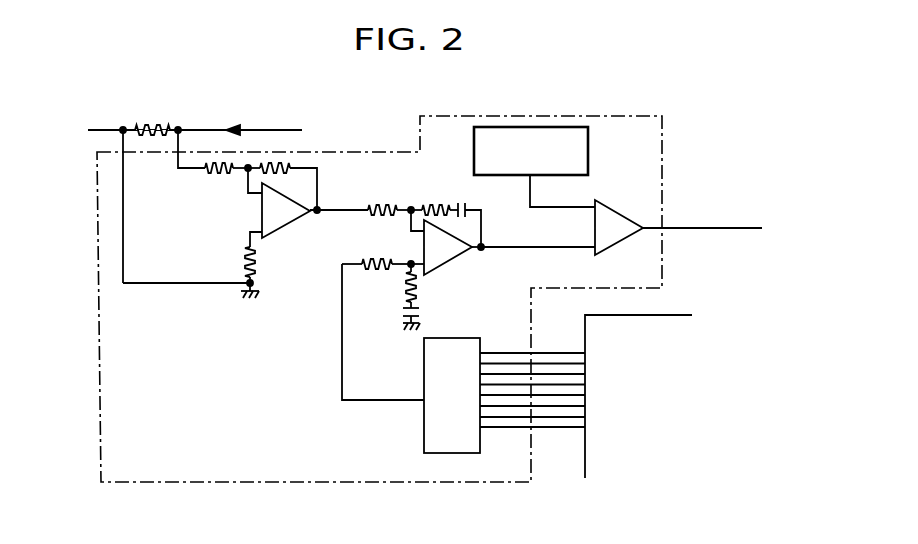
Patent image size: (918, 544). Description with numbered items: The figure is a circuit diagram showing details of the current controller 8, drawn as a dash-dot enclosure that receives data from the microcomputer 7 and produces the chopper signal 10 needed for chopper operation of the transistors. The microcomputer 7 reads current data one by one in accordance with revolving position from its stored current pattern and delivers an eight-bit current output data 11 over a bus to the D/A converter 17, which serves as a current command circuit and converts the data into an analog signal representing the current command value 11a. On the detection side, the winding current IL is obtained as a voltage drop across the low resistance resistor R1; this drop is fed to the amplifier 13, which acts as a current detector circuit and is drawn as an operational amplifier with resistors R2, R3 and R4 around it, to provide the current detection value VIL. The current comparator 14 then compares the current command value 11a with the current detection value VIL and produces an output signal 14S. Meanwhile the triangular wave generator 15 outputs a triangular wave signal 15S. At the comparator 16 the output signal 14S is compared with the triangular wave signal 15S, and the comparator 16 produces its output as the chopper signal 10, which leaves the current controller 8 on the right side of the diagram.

The microcomputer 7 is at (676, 396).
The current controller 8 is at (662, 131).
The chopper signal 10 is at (695, 214).
The current output data 11 is at (558, 428).
The current command value 11a is at (355, 400).
The amplifier 13 is at (229, 345).
The current comparator 14 is at (466, 299).
The output signal 14S is at (508, 232).
The triangular wave generator 15 is at (588, 161).
The triangular wave signal 15S is at (578, 205).
The comparator 16 is at (581, 282).
The D/A converter 17 is at (424, 372).
The low resistance resistor R1 is at (154, 112).
The resistor R2 is at (220, 183).
The feedback resistor R3 is at (289, 183).
The resistor R4 is at (272, 263).
The winding current IL is at (248, 111).
The current detection value VIL is at (323, 229).